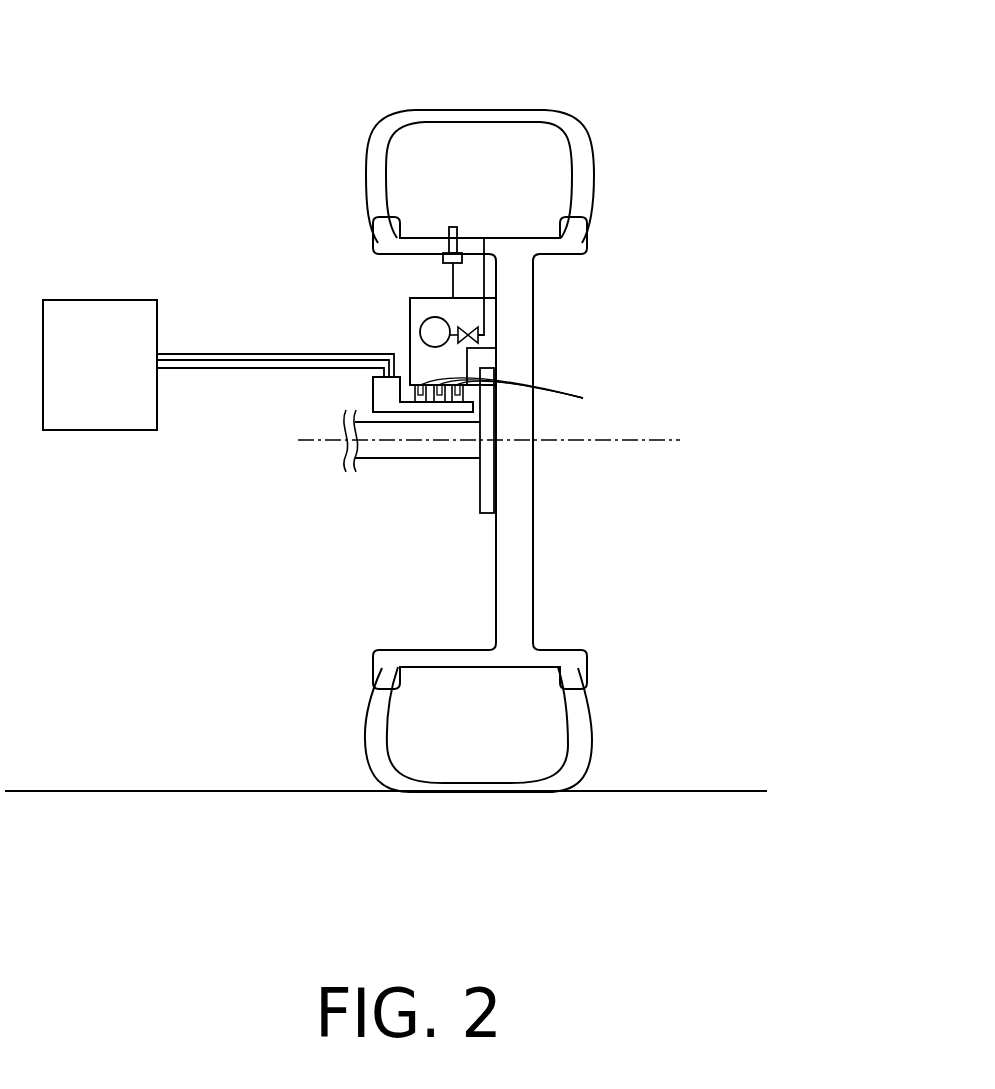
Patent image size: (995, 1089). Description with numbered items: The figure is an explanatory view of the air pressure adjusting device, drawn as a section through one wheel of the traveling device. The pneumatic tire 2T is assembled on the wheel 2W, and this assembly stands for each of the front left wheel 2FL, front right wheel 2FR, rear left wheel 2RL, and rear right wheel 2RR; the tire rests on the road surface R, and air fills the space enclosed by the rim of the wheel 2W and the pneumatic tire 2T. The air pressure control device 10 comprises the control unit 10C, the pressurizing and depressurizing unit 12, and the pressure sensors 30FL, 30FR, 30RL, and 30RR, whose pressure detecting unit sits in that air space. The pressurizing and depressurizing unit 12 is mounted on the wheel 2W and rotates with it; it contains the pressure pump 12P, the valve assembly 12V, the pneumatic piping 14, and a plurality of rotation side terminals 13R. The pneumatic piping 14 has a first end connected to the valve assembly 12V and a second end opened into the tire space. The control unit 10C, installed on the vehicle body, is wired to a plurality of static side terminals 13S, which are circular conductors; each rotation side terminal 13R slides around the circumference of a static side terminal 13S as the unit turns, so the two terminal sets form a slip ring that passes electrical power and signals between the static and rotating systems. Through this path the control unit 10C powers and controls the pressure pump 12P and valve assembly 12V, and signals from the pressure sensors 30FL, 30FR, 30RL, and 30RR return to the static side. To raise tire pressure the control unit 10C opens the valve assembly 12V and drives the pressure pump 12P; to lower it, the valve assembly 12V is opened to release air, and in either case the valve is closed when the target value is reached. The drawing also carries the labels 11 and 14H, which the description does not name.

The air pressure control device 10 is at (90, 146).
The control unit 10C is at (91, 317).
The bracket 11 is at (383, 393).
The pressurizing and depressurizing unit 12 is at (399, 324).
The pressure pump 12P is at (417, 327).
The valve assembly 12V is at (455, 324).
The static side terminals 13S is at (457, 403).
The rotation side terminals 13R is at (522, 393).
The pneumatic piping 14 is at (487, 278).
The air hole 14H is at (487, 230).
The pneumatic tire 2T is at (582, 170).
The wheel 2W is at (520, 343).
The front left wheel 2FL is at (567, 413).
The front right wheel 2FR is at (567, 413).
The rear left wheel 2RL is at (567, 413).
The rear right wheel 2RR is at (567, 413).
The pressure sensor 30FL is at (343, 166).
The pressure sensor 30FR is at (343, 166).
The pressure sensor 30RL is at (343, 166).
The pressure sensor 30RR is at (452, 226).
The road surface R is at (718, 789).